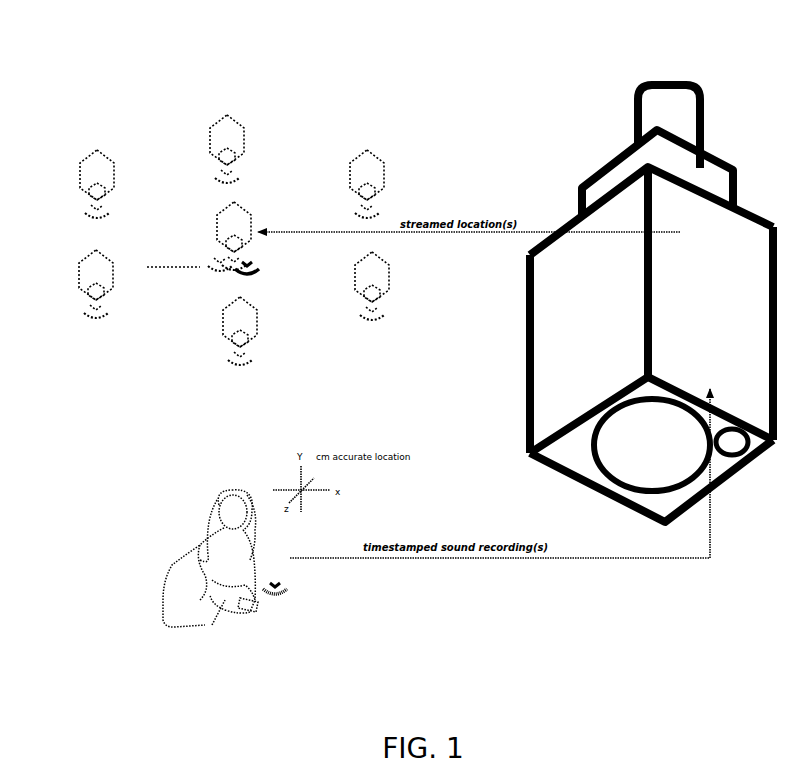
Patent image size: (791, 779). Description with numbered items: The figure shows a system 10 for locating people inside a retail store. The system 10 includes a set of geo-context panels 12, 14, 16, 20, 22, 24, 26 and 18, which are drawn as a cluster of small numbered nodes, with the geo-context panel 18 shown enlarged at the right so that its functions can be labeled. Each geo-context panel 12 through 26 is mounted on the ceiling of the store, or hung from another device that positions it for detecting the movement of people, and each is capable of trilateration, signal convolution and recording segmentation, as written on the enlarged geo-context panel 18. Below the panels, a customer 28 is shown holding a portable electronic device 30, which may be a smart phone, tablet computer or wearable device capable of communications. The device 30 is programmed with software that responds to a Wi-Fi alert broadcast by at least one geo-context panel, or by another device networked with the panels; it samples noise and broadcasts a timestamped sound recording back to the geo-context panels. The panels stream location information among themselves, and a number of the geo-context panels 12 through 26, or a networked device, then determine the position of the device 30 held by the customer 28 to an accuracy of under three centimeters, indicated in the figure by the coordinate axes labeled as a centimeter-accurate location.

The system 10 is at (86, 65).
The geo-context panel 12 is at (86, 163).
The geo-context panel 14 is at (213, 140).
The geo-context panel 16 is at (357, 165).
The geo-context panel 18 is at (703, 125).
The geo-context panel 20 is at (82, 292).
The geo-context panel 22 is at (215, 243).
The geo-context panel 24 is at (386, 294).
The geo-context panel 26 is at (224, 336).
The customer 28 is at (200, 512).
The portable electronic device 30 is at (256, 602).